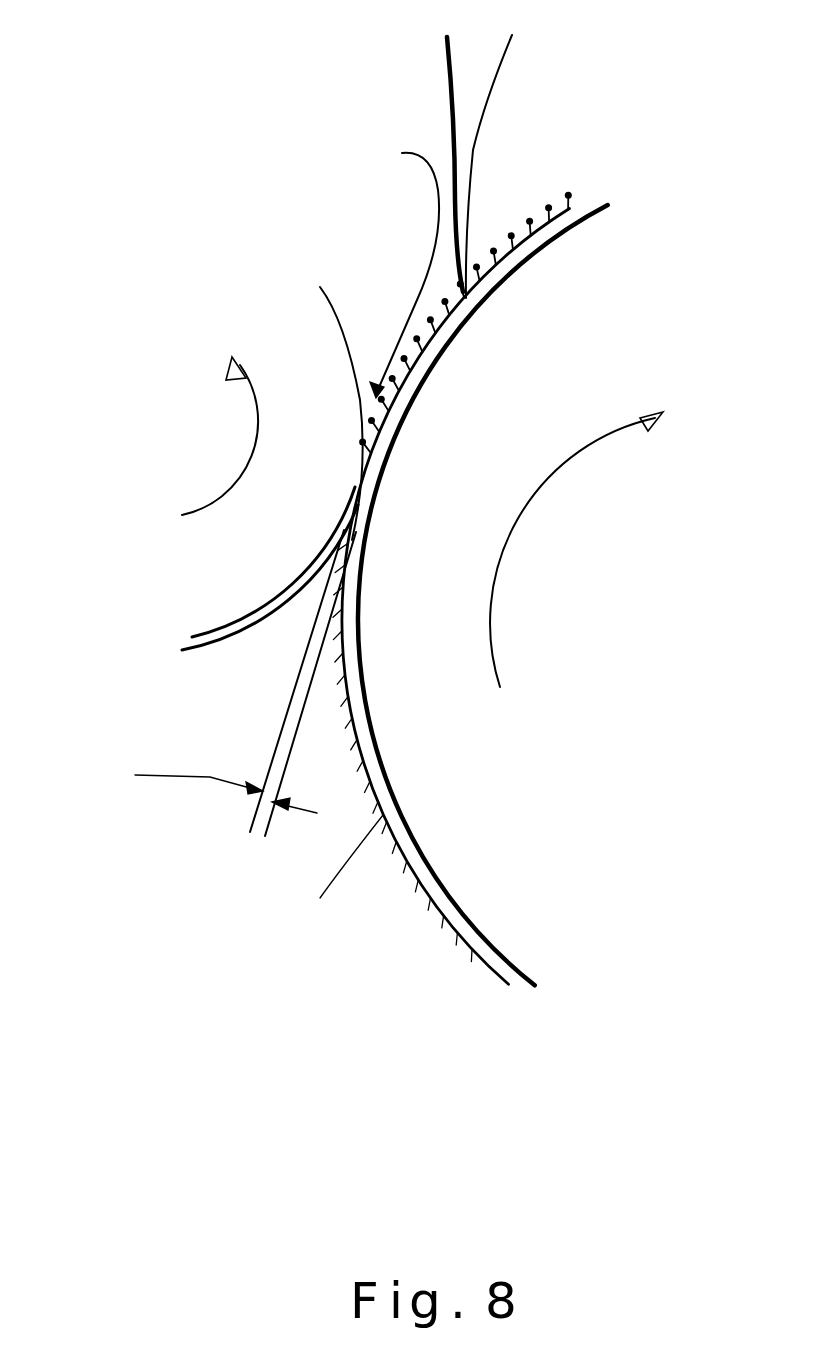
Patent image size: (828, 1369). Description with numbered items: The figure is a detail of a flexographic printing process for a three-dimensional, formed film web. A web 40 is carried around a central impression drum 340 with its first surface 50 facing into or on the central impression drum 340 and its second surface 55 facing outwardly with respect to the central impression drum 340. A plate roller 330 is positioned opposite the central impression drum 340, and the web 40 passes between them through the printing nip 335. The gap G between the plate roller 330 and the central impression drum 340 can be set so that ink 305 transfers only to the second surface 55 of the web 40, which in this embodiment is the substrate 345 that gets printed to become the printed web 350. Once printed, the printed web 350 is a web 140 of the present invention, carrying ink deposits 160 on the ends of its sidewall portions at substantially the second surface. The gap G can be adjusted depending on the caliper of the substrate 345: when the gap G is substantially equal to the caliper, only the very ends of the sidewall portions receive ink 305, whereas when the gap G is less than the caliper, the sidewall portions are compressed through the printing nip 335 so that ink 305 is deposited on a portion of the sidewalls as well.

The central impression drum 340 is at (520, 985).
The first surface 50 is at (402, 836).
The substrate 345 is at (425, 897).
The printed web 350 is at (480, 312).
The ink deposits 160 is at (446, 146).
The web 140 is at (516, 149).
The printing nip 335 is at (447, 128).
The plate roller 330 is at (337, 302).
The ink 305 is at (220, 650).
The second surface 55 is at (370, 797).
The web 40 is at (337, 873).
The gap G is at (207, 787).